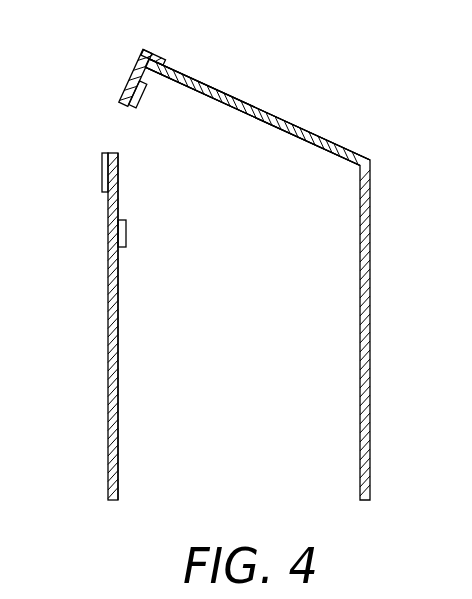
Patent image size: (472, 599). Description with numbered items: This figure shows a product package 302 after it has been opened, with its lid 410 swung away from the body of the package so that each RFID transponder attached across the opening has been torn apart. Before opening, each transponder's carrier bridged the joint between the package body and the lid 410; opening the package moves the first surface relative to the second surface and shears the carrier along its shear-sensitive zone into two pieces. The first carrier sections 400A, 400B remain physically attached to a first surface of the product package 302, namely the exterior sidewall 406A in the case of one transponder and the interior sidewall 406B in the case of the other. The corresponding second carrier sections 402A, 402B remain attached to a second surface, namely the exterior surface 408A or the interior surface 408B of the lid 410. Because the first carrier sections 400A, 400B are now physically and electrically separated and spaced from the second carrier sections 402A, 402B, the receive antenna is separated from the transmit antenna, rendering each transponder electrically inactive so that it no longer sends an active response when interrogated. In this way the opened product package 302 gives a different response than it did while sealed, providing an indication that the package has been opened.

The product package 302 is at (370, 294).
The lid 410 is at (326, 139).
The exterior surface of lid 408A is at (211, 85).
The interior surface of lid 408B is at (277, 130).
The second carrier section 402A is at (144, 49).
The second carrier section 402B is at (141, 101).
The exterior sidewall 406A is at (108, 407).
The interior sidewall 406B is at (118, 455).
The first carrier section 400A is at (102, 172).
The first carrier section 400B is at (126, 236).